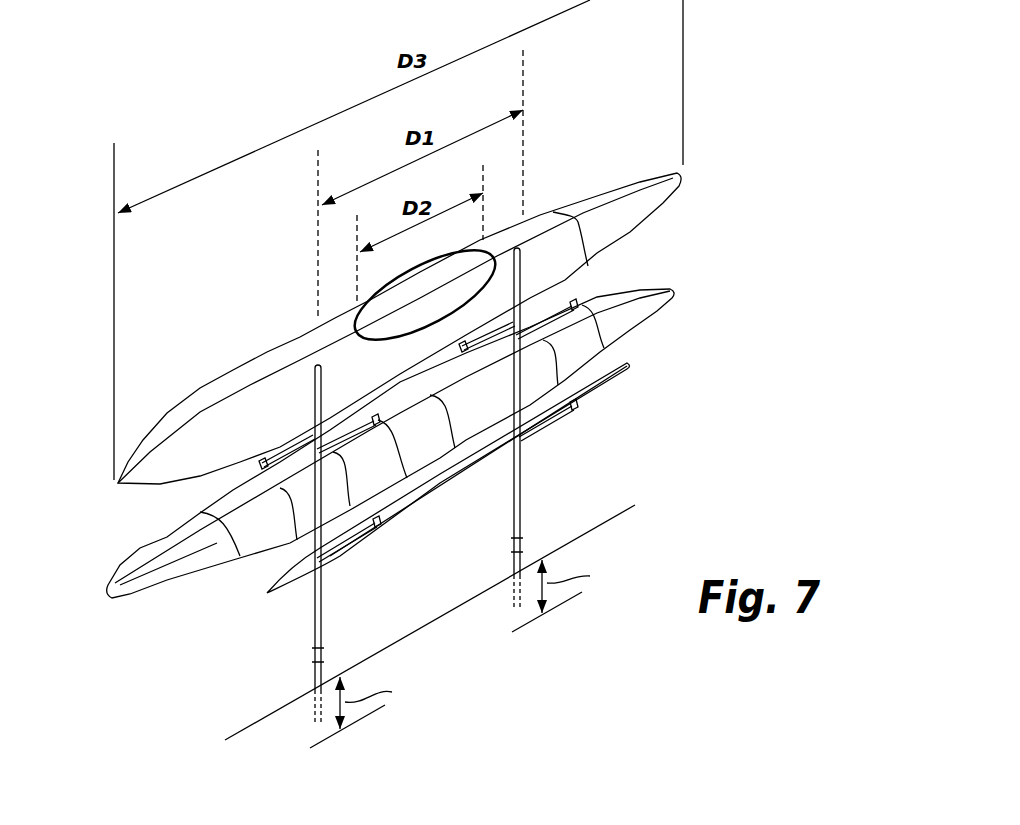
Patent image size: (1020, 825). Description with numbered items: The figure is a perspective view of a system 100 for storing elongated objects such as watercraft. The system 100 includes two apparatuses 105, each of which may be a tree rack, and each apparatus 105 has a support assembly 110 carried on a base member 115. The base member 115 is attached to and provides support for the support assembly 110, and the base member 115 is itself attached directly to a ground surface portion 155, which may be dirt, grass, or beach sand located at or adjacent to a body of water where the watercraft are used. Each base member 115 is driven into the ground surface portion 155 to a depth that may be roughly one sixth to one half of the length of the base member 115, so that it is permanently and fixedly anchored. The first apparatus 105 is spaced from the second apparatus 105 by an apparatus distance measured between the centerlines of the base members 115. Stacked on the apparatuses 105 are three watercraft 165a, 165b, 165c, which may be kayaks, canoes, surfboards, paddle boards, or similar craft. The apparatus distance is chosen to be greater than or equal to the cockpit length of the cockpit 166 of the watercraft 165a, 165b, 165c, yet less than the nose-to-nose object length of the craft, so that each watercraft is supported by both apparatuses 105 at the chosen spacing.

The system 100 is at (587, 102).
The apparatus 105 is at (538, 455).
The support assembly 110 is at (506, 483).
The base member 115 is at (518, 557).
The ground surface portion 155 is at (613, 512).
The watercraft 165a is at (610, 193).
The watercraft 165b is at (632, 307).
The watercraft 165c is at (663, 365).
The cockpit 166 is at (433, 283).